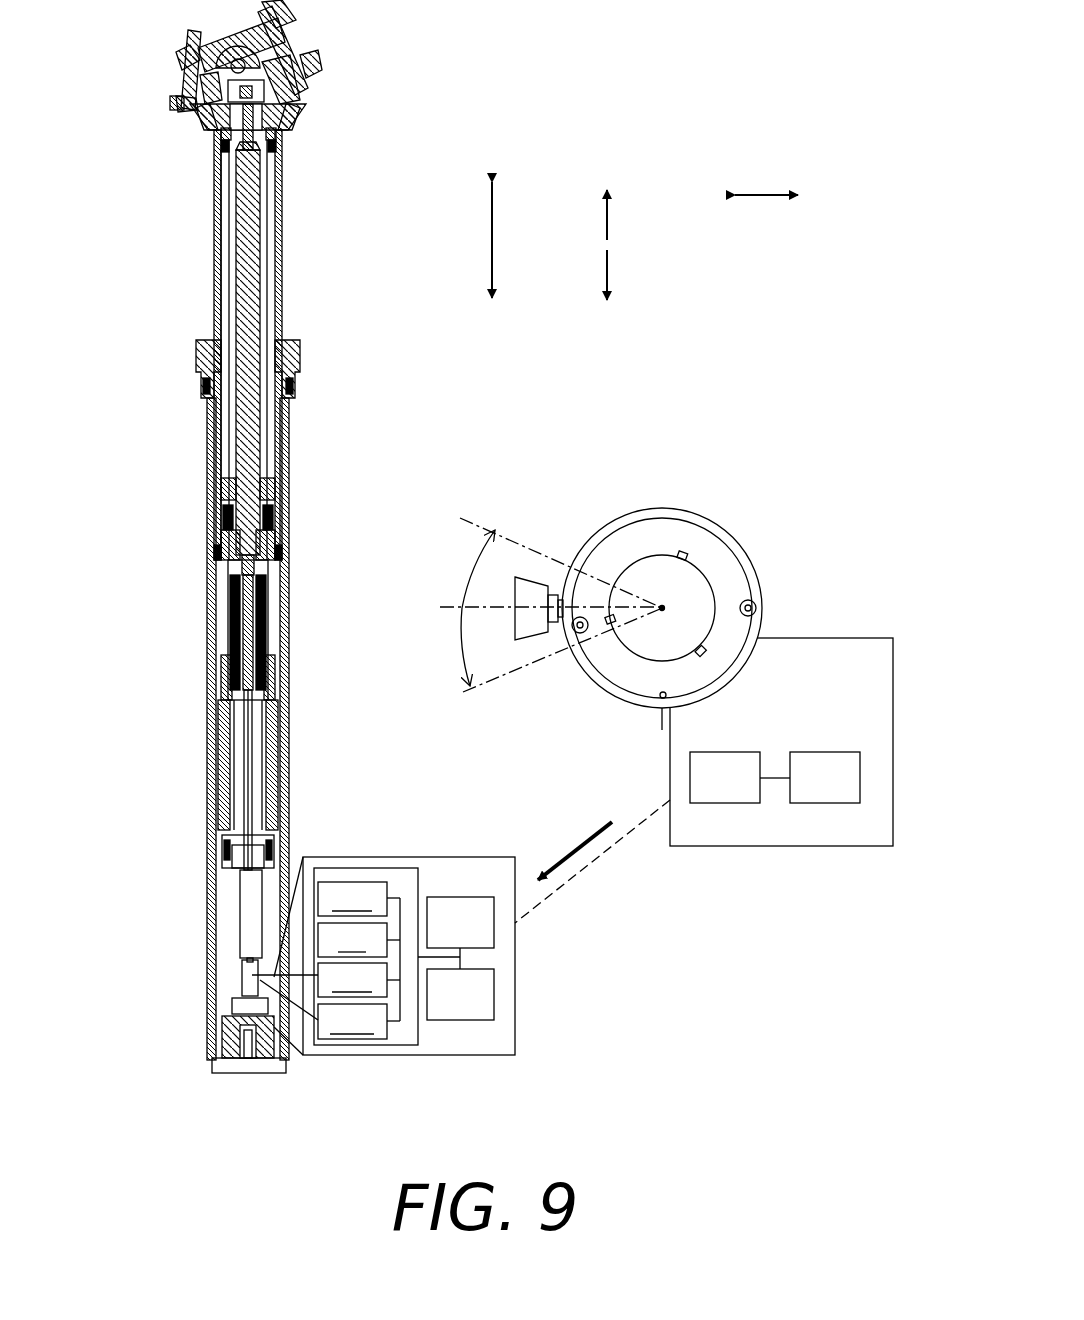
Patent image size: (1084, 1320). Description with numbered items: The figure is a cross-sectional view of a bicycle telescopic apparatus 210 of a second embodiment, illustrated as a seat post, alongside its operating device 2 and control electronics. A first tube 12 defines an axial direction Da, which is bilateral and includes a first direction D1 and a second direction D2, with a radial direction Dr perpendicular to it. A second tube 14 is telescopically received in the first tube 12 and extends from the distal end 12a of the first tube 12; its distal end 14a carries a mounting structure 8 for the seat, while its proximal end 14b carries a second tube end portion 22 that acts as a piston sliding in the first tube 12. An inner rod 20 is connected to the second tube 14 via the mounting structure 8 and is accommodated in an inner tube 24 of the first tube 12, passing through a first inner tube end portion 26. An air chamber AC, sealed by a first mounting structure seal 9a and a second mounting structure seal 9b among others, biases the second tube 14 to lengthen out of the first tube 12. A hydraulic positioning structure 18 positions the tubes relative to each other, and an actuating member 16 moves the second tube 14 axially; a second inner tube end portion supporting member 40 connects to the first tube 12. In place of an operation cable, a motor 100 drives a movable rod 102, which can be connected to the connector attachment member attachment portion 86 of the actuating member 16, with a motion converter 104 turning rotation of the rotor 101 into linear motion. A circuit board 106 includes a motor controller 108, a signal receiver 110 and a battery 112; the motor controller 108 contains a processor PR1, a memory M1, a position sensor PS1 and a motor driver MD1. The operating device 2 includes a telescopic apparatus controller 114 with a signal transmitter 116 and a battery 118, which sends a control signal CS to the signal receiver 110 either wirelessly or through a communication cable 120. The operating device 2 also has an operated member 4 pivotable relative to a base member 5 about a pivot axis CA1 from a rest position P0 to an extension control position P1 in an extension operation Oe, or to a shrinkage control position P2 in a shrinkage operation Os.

The mounting structure 8 is at (322, 46).
The bicycle telescopic apparatus 210 is at (360, 108).
The first mounting structure seal 9a is at (186, 108).
The second mounting structure seal 9b is at (221, 145).
The distal end 14a is at (282, 140).
The second tube 14 is at (284, 230).
The air chamber AC is at (230, 290).
The inner rod 20 is at (262, 312).
The distal end 12a is at (296, 378).
The first tube 12 is at (292, 625).
The first inner tube end portion 26 is at (224, 480).
The second tube end portion 22 is at (222, 535).
The proximal end 14b is at (283, 541).
The inner tube 24 is at (230, 588).
The connector attachment member attachment portion 86 is at (224, 672).
The hydraulic positioning structure 18 is at (262, 650).
The actuating member 16 is at (262, 712).
The movable rod 102 is at (226, 795).
The second inner tube end portion supporting member 40 is at (224, 866).
The motion converter 104 is at (240, 905).
The rotor 101 is at (242, 952).
The motor 100 is at (232, 985).
The circuit board 106 is at (222, 1040).
The motor controller 108 is at (418, 1040).
The signal receiver 110 is at (440, 935).
The battery 112 is at (440, 1007).
The processor PR1 is at (352, 899).
The memory M1 is at (352, 940).
The position sensor PS1 is at (319, 980).
The motor driver MD1 is at (323, 1009).
The telescopic apparatus controller 114 is at (670, 765).
The signal transmitter 116 is at (705, 790).
The battery 118 is at (805, 790).
The communication cable 120 is at (620, 850).
The control signal CS is at (552, 870).
The operating device 2 is at (669, 512).
The base member 5 is at (650, 530).
The operated member 4 is at (533, 644).
The pivot axis CA1 is at (664, 608).
The extension control position P1 is at (541, 553).
The rest position P0 is at (534, 607).
The shrinkage control position P2 is at (539, 660).
The extension operation Oe is at (467, 575).
The shrinkage operation Os is at (465, 640).
The axial direction Da is at (495, 237).
The first direction D1 is at (609, 263).
The second direction D2 is at (609, 206).
The radial direction Dr is at (767, 198).